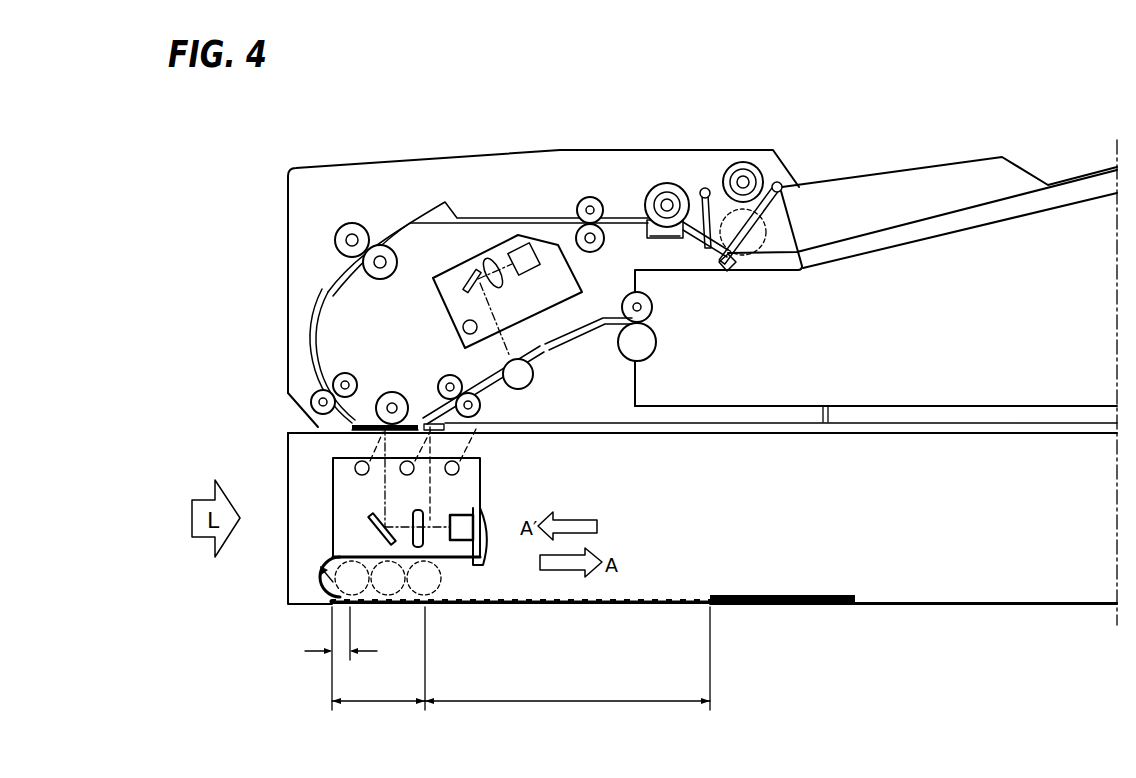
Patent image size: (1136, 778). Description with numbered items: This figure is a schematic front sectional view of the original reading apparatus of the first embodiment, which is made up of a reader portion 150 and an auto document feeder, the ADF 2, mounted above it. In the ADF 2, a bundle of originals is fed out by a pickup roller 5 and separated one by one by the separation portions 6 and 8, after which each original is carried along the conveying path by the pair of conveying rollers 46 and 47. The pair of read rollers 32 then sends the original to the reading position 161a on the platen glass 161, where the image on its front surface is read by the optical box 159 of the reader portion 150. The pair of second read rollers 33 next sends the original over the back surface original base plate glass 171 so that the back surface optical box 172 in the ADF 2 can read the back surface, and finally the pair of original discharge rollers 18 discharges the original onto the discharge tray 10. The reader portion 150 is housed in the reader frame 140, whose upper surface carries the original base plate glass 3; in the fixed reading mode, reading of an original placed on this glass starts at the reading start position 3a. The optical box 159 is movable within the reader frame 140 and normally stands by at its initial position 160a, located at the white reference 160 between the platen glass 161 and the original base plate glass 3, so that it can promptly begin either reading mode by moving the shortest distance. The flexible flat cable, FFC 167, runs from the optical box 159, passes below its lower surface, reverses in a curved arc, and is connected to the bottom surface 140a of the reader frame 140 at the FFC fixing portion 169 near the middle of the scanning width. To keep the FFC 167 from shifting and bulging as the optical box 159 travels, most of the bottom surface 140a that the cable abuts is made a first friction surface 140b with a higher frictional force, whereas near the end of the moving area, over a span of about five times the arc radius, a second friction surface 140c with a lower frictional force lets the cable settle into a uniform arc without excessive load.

The auto document feeder 2 is at (282, 214).
The original base plate glass 3 is at (621, 437).
The reading start position 3a is at (480, 427).
The pickup roller 5 is at (746, 163).
The separation portion 6 is at (668, 238).
The separation portion 8 is at (664, 184).
The discharge tray 10 is at (772, 405).
The pair of original discharge rollers 18 is at (652, 312).
The pair of read rollers 32 is at (300, 388).
The pair of second read rollers 33 is at (488, 397).
The conveying roller 46 is at (372, 243).
The conveying roller 47 is at (586, 198).
The reader frame 140 is at (1028, 606).
The bottom surface of the reader frame 140a is at (872, 602).
The first friction surface 140b is at (571, 704).
The second friction surface 140c is at (377, 704).
The reader portion 150 is at (278, 576).
The optical box 159 is at (333, 518).
The white reference 160 is at (430, 462).
The initial position 160a is at (427, 422).
The platen glass 161 is at (352, 427).
The reading position 161a is at (378, 436).
The flexible flat cable 167 is at (658, 596).
The FFC fixing portion 169 is at (778, 594).
The back surface original base plate glass 171 is at (532, 352).
The back surface optical box 172 is at (463, 327).